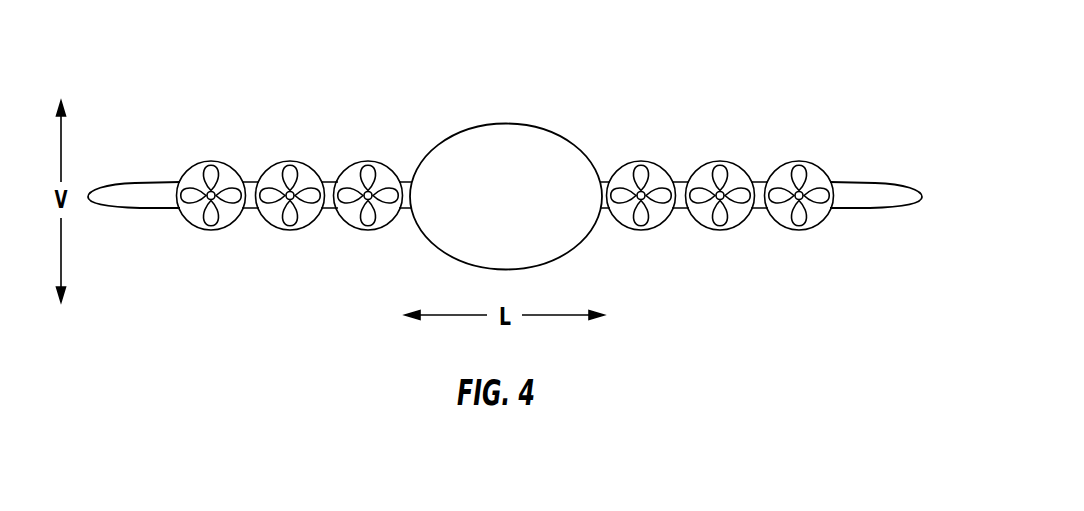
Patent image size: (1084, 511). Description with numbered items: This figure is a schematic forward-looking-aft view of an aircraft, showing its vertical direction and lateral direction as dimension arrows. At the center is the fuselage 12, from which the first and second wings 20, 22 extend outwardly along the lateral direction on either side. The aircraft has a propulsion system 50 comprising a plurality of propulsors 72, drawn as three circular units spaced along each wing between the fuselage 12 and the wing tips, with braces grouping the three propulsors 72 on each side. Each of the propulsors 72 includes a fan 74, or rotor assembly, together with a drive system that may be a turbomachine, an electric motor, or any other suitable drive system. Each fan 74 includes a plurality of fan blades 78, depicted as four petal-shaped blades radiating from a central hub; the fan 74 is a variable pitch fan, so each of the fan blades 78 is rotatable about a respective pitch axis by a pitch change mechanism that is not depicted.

The fuselage 12 is at (480, 137).
The first wing 20 is at (887, 185).
The second wing 22 is at (147, 182).
The propulsion system 50 is at (746, 118).
The propulsor 72 is at (217, 230).
The fan 74 is at (809, 136).
The fan blade 78 is at (810, 163).